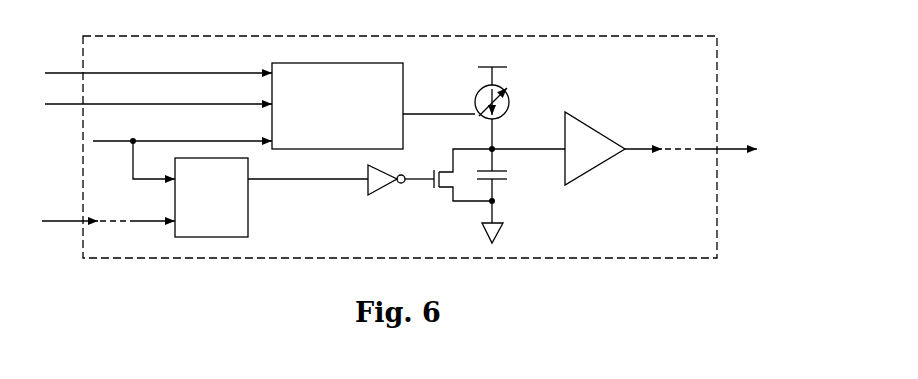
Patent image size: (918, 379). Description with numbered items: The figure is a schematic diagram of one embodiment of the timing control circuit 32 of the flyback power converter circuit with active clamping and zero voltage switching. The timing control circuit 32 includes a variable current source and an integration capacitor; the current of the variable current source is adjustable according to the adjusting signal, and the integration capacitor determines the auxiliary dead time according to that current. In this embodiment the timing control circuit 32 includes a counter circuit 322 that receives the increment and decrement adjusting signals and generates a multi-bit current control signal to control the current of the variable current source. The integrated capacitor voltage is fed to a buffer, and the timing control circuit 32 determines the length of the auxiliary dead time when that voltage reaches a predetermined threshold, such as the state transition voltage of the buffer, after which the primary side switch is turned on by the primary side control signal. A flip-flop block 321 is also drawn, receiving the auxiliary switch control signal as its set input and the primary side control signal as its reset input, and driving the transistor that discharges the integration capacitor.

The timing control circuit 32 is at (662, 244).
The flip-flop 321 is at (238, 231).
The counter circuit 322 is at (322, 142).